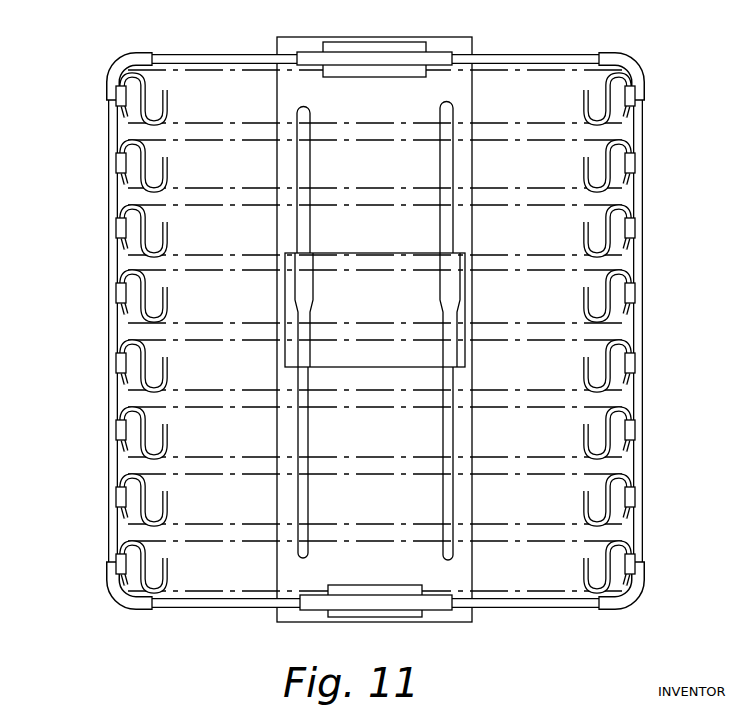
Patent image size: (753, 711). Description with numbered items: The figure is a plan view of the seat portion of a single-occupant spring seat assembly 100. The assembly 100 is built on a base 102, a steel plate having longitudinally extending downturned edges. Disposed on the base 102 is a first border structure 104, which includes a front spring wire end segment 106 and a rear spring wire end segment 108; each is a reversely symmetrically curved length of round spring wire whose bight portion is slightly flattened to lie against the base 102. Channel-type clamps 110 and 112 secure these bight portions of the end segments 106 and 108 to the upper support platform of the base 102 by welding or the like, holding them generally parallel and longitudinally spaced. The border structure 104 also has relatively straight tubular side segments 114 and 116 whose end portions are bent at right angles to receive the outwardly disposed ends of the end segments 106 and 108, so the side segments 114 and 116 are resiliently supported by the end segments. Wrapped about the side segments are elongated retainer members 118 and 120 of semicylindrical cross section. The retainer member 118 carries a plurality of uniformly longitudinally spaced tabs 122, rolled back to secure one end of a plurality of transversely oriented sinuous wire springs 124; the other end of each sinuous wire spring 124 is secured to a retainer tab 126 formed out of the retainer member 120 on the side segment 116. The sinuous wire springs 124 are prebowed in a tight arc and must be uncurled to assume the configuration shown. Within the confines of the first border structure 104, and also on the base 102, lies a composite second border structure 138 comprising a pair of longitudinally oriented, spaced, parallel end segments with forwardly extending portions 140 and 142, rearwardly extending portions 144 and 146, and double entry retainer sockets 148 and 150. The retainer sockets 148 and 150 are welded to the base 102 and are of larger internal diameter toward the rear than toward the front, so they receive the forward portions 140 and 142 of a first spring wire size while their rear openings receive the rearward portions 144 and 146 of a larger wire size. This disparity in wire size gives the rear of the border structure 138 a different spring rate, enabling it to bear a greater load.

The spring seat assembly 100 is at (384, 329).
The base 102 is at (462, 574).
The first border structure 104 is at (500, 53).
The front spring wire end segment 106 is at (188, 609).
The rear spring wire end segment 108 is at (190, 54).
The channel-type clamp 110 is at (355, 602).
The channel-type clamp 112 is at (372, 52).
The tubular side segment 114 is at (640, 60).
The tubular side segment 116 is at (108, 590).
The retainer member 118 is at (645, 338).
The retainer member 120 is at (108, 254).
The tabs 122 is at (636, 142).
The sinuous wire springs 124 is at (584, 152).
The retainer tab 126 is at (116, 158).
The second border structure 138 is at (345, 333).
The forwardly extending portion 140 is at (445, 410).
The forwardly extending portion 142 is at (305, 505).
The rearwardly extending portion 144 is at (391, 331).
The rearwardly extending portion 146 is at (305, 236).
The double entry retainer socket 148 is at (375, 310).
The double entry retainer socket 150 is at (306, 360).